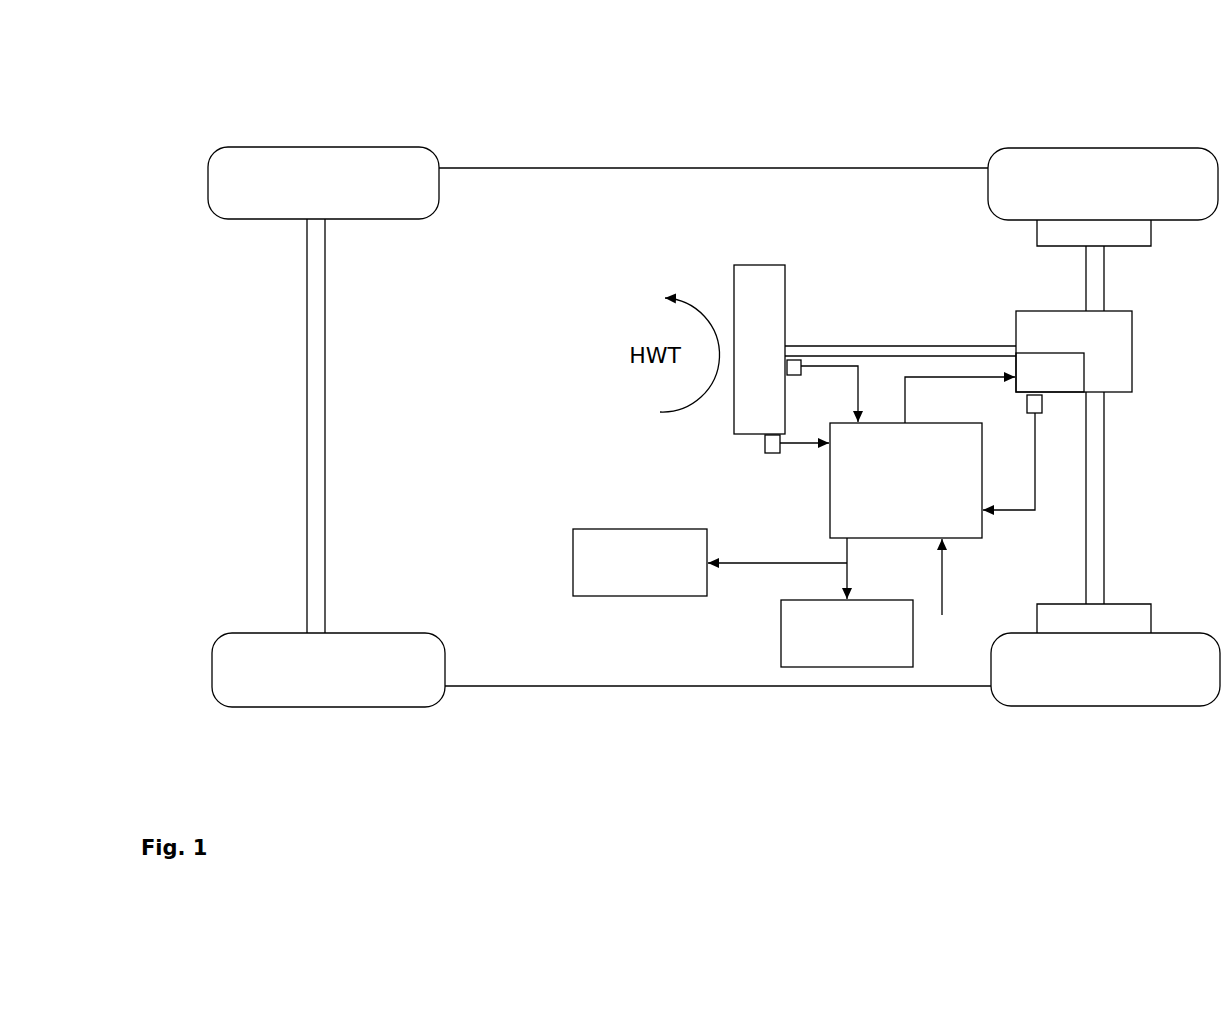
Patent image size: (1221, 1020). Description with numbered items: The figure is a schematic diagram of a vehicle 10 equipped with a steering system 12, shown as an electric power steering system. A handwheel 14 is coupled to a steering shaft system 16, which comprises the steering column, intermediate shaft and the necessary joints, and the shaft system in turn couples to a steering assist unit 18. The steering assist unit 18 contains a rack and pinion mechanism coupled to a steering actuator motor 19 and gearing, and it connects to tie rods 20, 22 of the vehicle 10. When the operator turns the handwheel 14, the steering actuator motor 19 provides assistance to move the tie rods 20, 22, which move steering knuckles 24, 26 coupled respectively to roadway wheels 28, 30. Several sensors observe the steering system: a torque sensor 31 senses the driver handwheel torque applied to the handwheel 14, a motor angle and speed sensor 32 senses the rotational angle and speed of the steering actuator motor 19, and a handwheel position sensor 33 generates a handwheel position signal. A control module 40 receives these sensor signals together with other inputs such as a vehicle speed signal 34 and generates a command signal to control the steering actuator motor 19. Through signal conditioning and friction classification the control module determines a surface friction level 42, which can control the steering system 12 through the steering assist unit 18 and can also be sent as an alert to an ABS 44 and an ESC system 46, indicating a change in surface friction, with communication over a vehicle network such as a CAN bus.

The vehicle 10 is at (755, 72).
The steering system 12 is at (866, 240).
The handwheel 14 is at (758, 263).
The steering shaft system 16 is at (873, 345).
The steering assist unit 18 is at (1132, 347).
The steering actuator motor 19 is at (1039, 385).
The tie rod 20 is at (1104, 291).
The tie rod 22 is at (1104, 468).
The steering knuckle 24 is at (1037, 226).
The steering knuckle 26 is at (1068, 603).
The roadway wheel 28 is at (1141, 146).
The roadway wheel 30 is at (1160, 632).
The torque sensor 31 is at (793, 378).
The motor angle and speed sensor 32 is at (1042, 405).
The handwheel position sensor 33 is at (770, 455).
The vehicle speed signal 34 is at (944, 592).
The control module 40 is at (925, 423).
The surface friction level 42 is at (850, 583).
The ABS 44 is at (583, 528).
The ESC system 46 is at (781, 633).